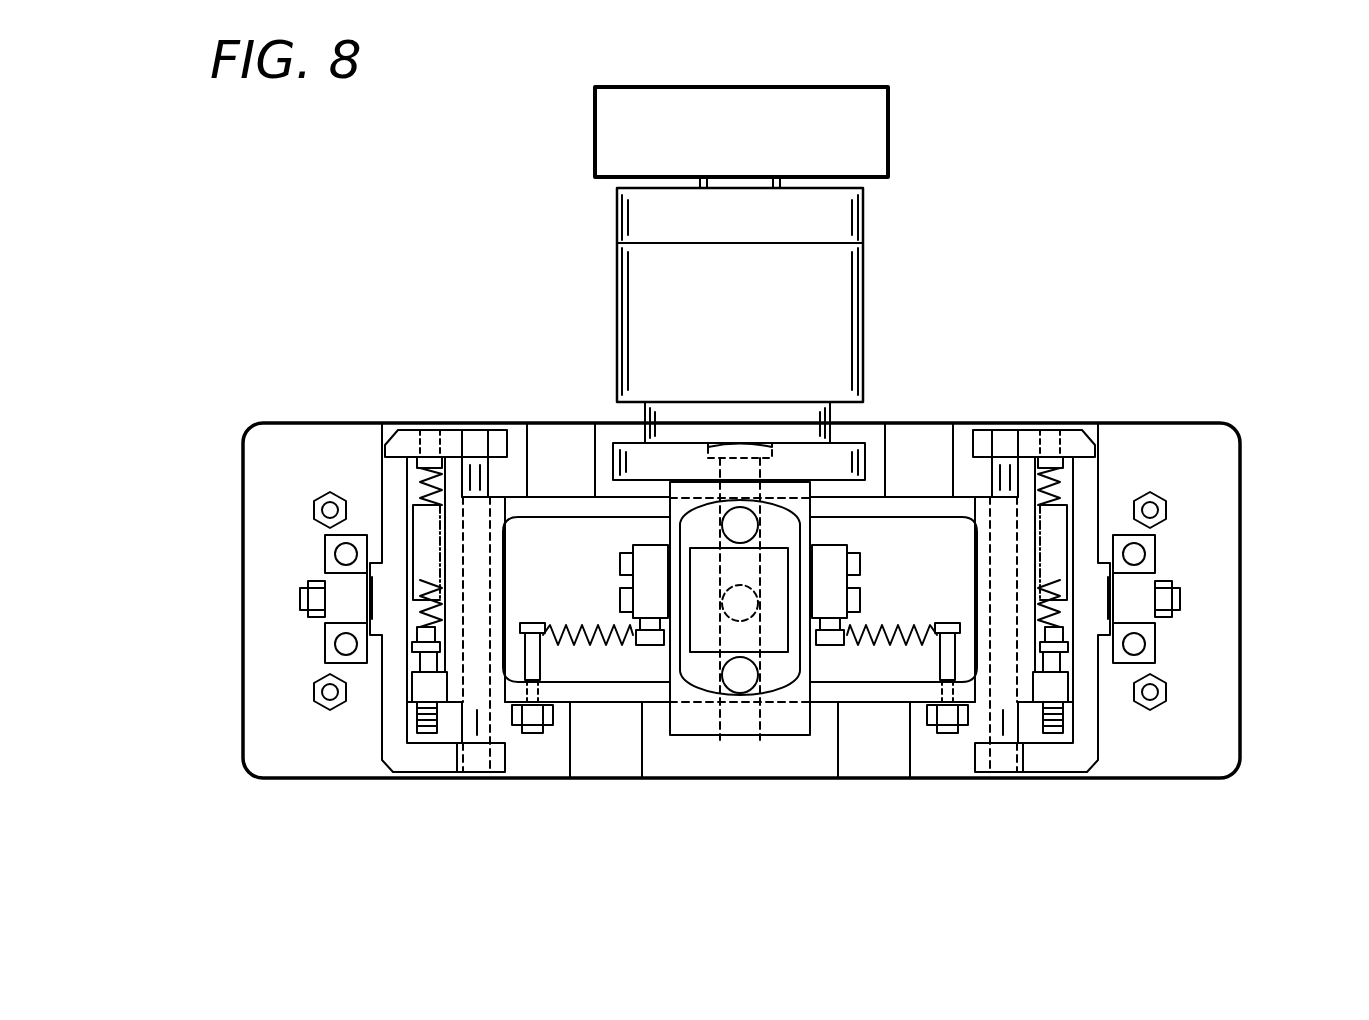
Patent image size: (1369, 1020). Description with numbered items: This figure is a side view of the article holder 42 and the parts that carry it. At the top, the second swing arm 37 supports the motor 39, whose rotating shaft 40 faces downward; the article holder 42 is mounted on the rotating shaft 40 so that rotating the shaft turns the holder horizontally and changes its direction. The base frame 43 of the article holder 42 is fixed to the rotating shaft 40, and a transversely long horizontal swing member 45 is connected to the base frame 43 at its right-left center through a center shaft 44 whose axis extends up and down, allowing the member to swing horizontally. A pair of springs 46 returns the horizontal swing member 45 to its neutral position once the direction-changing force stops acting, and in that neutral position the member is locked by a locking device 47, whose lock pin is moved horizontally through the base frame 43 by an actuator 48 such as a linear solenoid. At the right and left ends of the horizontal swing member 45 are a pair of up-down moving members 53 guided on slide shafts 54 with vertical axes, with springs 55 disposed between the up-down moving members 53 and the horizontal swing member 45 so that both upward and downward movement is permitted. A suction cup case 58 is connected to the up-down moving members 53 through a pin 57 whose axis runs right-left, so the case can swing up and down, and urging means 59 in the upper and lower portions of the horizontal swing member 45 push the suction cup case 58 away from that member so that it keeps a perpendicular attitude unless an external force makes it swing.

The second swing arm 37 is at (878, 118).
The motor 39 is at (838, 268).
The rotating shaft 40 is at (790, 410).
The article holder 42 is at (1253, 438).
The base frame 43 is at (695, 718).
The center shaft 44 is at (740, 740).
The horizontal swing member 45 is at (978, 688).
The springs 46 is at (585, 628).
The locking device 47 is at (776, 630).
The actuator 48 is at (800, 620).
The up-down moving members 53 is at (425, 752).
The slide shafts 54 is at (493, 720).
The springs 55 is at (428, 478).
The pin 57 is at (300, 596).
The suction cup case 58 is at (262, 543).
The urging means 59 is at (553, 440).